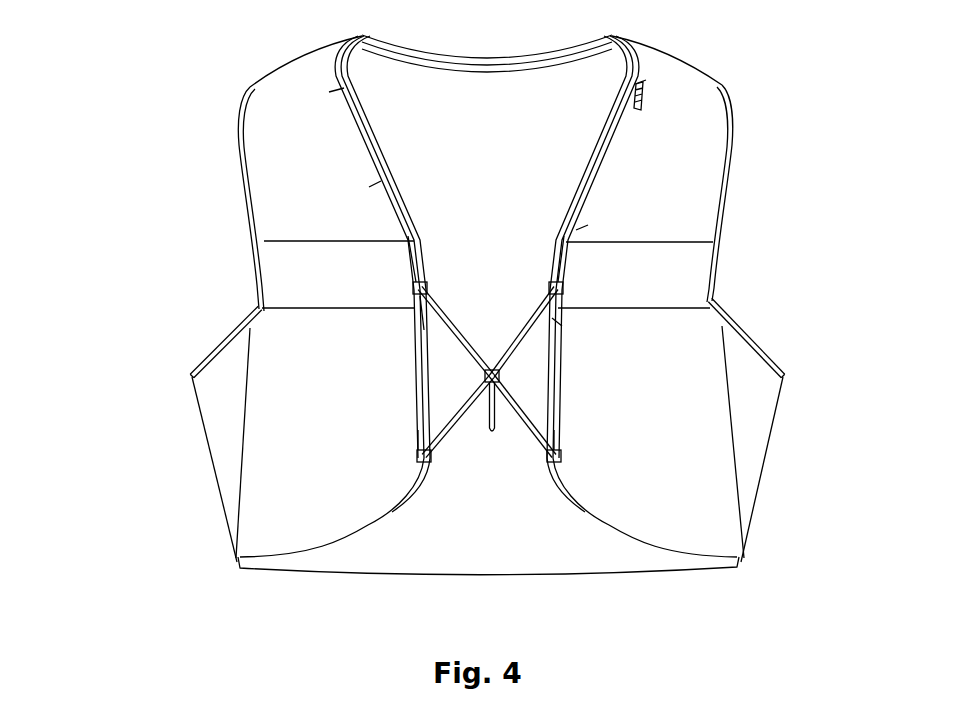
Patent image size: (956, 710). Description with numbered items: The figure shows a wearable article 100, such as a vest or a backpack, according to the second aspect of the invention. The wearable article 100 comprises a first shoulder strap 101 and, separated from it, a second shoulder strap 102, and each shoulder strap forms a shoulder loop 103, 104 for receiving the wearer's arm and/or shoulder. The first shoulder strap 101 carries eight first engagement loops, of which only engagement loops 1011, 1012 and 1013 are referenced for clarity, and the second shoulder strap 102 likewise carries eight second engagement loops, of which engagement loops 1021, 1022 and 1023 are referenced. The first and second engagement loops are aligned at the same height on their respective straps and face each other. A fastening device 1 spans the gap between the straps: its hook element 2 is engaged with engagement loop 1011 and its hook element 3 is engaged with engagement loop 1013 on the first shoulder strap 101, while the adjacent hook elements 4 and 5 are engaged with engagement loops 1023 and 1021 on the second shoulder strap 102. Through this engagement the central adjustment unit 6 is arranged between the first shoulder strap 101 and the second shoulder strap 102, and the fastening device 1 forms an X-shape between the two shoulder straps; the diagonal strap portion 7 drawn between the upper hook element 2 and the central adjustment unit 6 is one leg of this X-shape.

The wearable article 100 is at (402, 305).
The first shoulder strap 101 is at (241, 296).
The second shoulder strap 102 is at (731, 296).
The shoulder loop 103 is at (171, 342).
The shoulder loop 104 is at (817, 193).
The engagement loop 1011 is at (473, 220).
The engagement loop 1012 is at (484, 266).
The engagement loop 1013 is at (471, 535).
The engagement loop 1021 is at (688, 252).
The engagement loop 1022 is at (696, 338).
The engagement loop 1023 is at (690, 490).
The fastening device 1 is at (484, 429).
The hook element 2 is at (304, 264).
The hook element 3 is at (298, 505).
The hook element 4 is at (691, 448).
The hook element 5 is at (674, 283).
The central adjustment unit 6 is at (655, 400).
The diagonal strap 7 is at (314, 370).